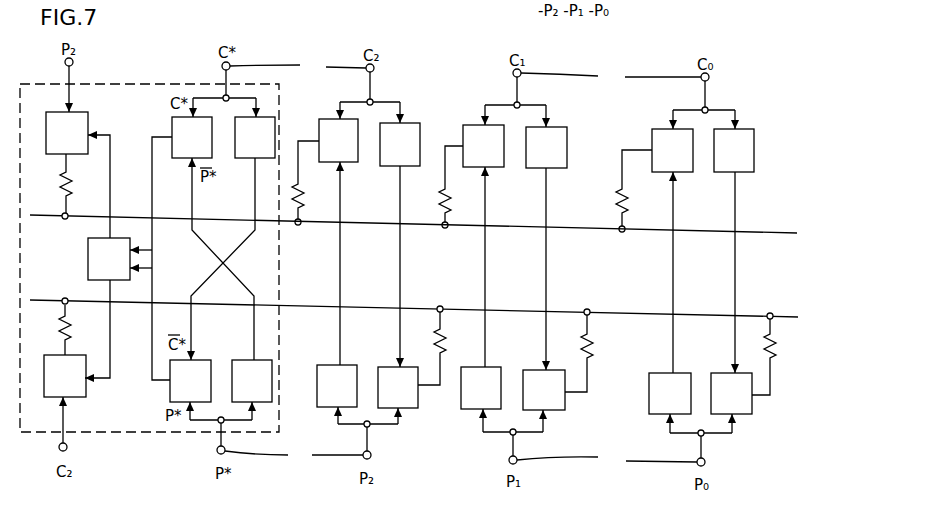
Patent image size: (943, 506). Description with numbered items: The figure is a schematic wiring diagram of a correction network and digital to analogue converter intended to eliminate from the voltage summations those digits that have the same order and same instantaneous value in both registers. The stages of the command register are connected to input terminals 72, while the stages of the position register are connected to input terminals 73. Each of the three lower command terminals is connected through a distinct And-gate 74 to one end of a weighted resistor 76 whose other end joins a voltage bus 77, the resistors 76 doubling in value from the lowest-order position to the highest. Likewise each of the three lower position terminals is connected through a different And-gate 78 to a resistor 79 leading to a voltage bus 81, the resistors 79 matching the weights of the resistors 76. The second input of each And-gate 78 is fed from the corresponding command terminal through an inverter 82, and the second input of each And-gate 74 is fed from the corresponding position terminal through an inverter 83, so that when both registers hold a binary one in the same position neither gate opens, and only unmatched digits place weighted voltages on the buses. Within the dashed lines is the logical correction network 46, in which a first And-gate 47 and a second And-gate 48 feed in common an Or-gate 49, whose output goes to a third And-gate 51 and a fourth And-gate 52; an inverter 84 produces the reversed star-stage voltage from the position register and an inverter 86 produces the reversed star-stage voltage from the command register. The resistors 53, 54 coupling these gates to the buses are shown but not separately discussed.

The logical correction network 46 is at (162, 84).
The first two-input And-gate 47 is at (172, 125).
The second two-input And-gate 48 is at (211, 355).
The Or-gate 49 is at (88, 256).
The third And-gate 51 is at (87, 114).
The fourth And-gate 52 is at (87, 393).
The resistor R/2 53 is at (60, 181).
The resistor R/2 54 is at (60, 326).
The input terminals 72 is at (465, 71).
The input terminals 73 is at (461, 459).
The And-gate 74 is at (319, 119).
The resistor 76 is at (303, 206).
The voltage bus 77 is at (381, 227).
The And-gate 78 is at (382, 367).
The resistor 79 is at (434, 343).
The voltage bus 81 is at (372, 306).
The inverter 82 is at (413, 123).
The inverter 83 is at (325, 358).
The inverter 84 is at (243, 360).
The inverter 86 is at (246, 159).